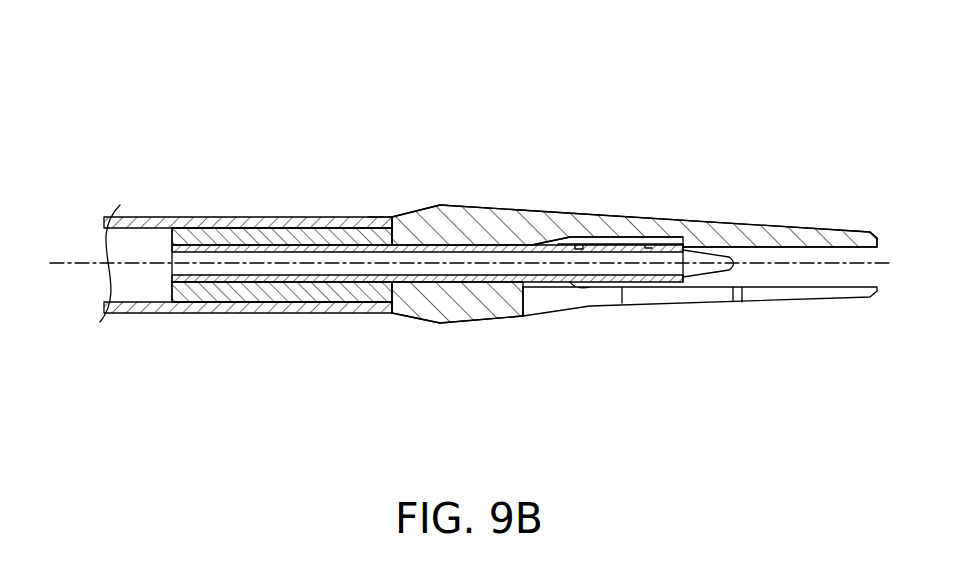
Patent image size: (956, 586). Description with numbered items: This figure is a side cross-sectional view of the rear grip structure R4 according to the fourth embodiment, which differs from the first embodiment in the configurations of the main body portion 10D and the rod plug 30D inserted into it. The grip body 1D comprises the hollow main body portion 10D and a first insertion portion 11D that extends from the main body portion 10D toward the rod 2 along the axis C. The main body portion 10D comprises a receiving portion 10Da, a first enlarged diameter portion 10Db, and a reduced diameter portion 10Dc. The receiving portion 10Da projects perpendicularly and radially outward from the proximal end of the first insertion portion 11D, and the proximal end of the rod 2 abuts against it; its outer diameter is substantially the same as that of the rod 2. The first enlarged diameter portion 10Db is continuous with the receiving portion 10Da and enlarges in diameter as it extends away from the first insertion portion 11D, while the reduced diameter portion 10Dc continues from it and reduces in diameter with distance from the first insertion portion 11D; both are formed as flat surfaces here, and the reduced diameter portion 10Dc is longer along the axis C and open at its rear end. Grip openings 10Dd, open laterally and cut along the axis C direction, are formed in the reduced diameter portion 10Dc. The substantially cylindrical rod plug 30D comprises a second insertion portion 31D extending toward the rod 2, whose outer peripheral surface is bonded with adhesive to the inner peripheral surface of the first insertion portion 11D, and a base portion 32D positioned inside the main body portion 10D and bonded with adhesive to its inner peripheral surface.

The rear grip structure R4 is at (270, 77).
The grip body 1D is at (524, 228).
The main body portion 10D is at (577, 249).
The receiving portion 10Da is at (368, 217).
The first enlarged diameter portion 10Db is at (417, 210).
The reduced diameter portion 10Dc is at (608, 218).
The grip opening 10Dd is at (524, 303).
The rod 2 is at (208, 218).
The axis C is at (85, 262).
The first insertion portion 11D is at (218, 293).
The second insertion portion 31D is at (320, 282).
The rod plug 30D is at (612, 294).
The base portion 32D is at (625, 303).